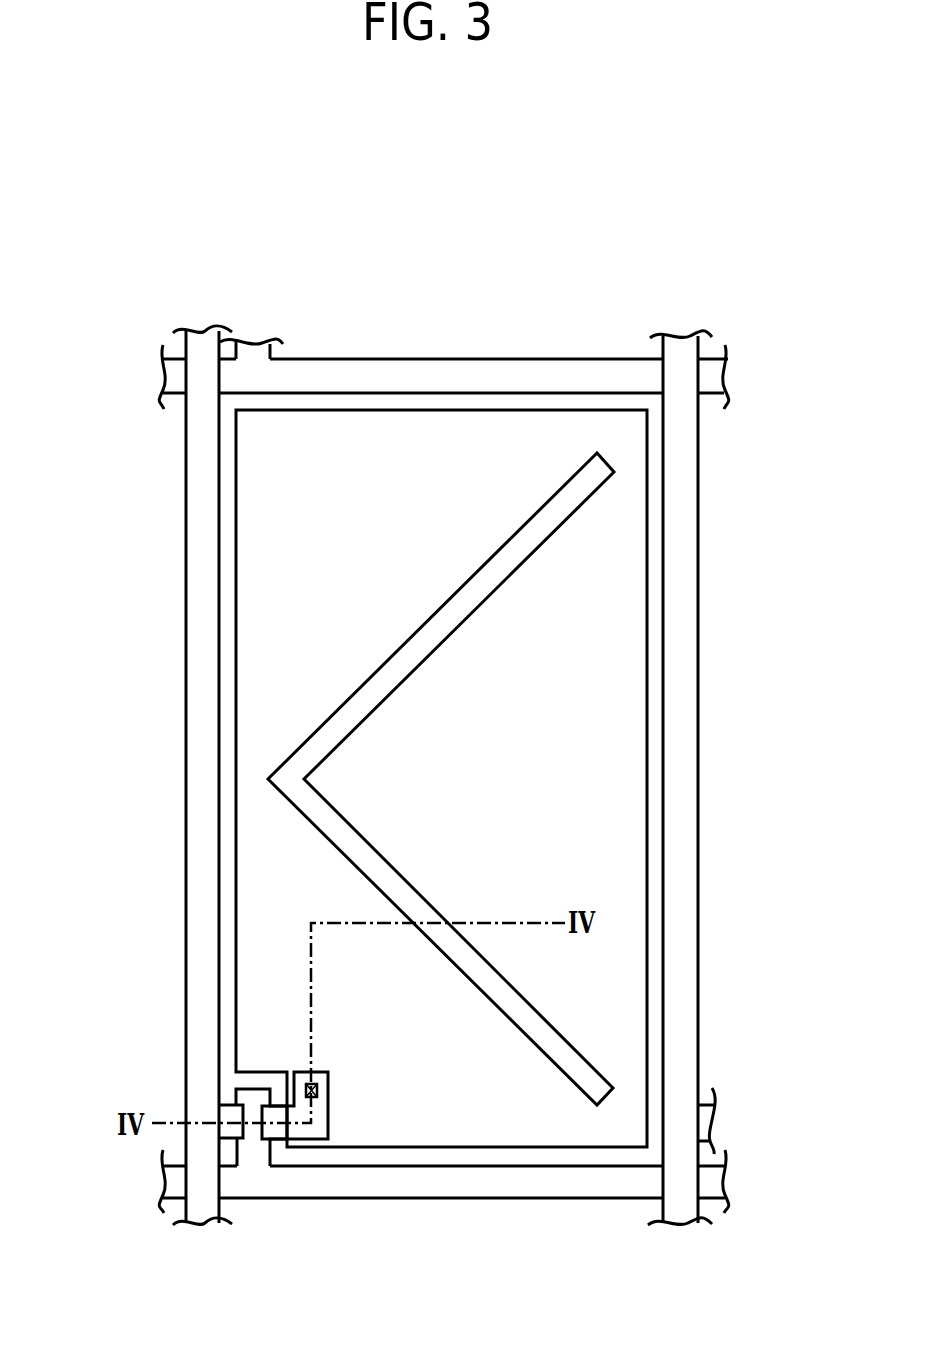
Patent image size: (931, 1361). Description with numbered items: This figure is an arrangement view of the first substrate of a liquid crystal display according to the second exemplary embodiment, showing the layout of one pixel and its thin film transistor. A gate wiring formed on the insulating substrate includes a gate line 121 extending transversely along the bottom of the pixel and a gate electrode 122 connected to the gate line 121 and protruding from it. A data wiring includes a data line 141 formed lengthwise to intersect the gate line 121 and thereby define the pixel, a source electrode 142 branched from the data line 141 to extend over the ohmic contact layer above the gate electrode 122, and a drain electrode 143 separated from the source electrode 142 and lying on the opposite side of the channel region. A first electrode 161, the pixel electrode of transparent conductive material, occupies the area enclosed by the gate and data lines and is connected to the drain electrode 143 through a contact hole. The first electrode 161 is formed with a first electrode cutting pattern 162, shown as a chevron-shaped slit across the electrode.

The gate line 121 is at (541, 1190).
The gate electrode 122 is at (237, 1097).
The data line 141 is at (692, 738).
The source electrode 142 is at (243, 1136).
The drain electrode 143 is at (310, 1136).
The first electrode 161 is at (237, 603).
The first electrode cutting pattern 162 is at (583, 1064).